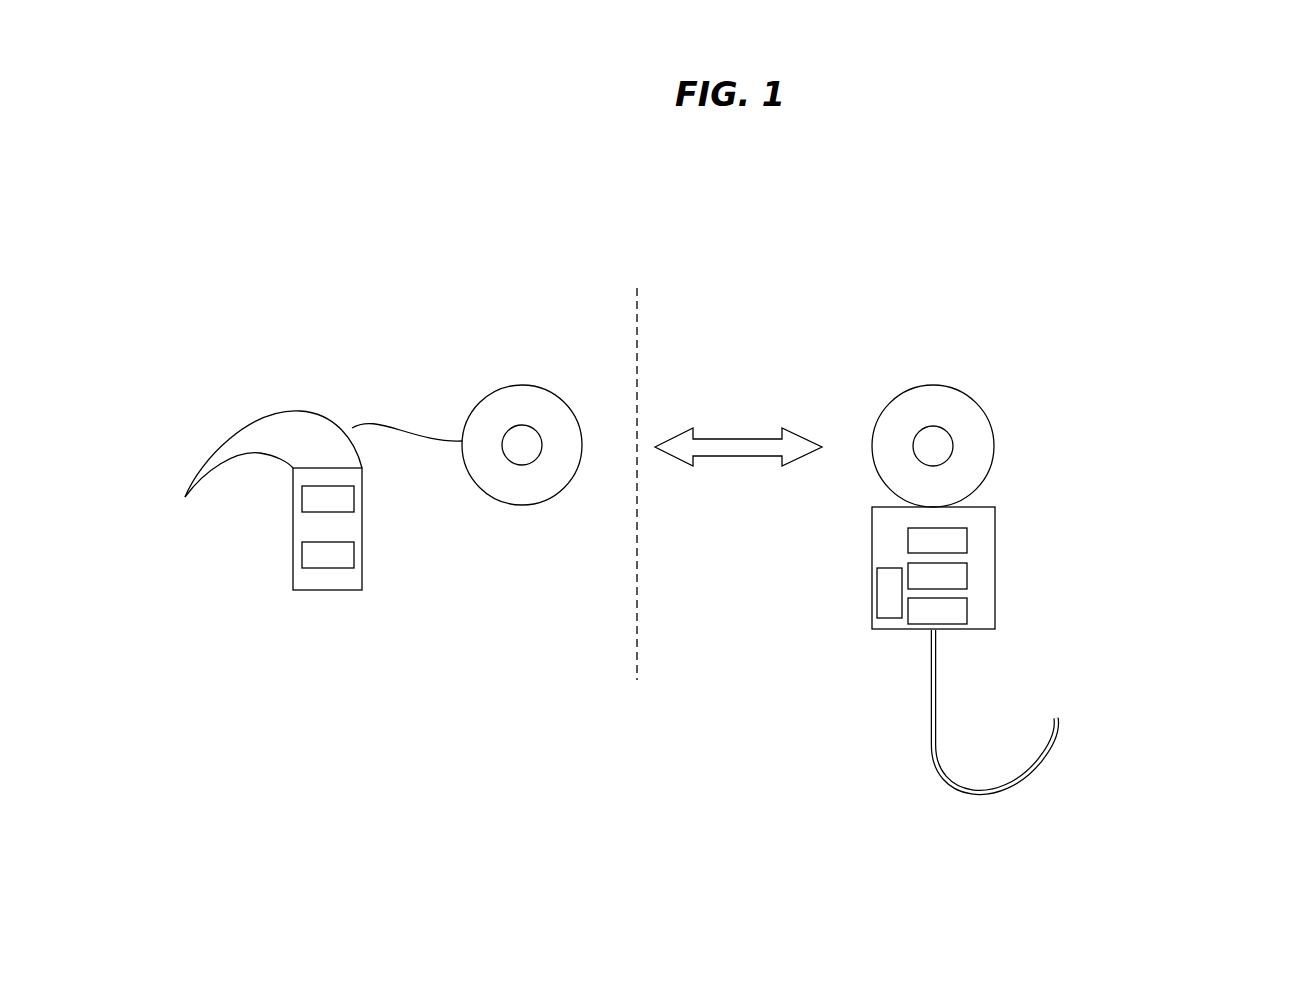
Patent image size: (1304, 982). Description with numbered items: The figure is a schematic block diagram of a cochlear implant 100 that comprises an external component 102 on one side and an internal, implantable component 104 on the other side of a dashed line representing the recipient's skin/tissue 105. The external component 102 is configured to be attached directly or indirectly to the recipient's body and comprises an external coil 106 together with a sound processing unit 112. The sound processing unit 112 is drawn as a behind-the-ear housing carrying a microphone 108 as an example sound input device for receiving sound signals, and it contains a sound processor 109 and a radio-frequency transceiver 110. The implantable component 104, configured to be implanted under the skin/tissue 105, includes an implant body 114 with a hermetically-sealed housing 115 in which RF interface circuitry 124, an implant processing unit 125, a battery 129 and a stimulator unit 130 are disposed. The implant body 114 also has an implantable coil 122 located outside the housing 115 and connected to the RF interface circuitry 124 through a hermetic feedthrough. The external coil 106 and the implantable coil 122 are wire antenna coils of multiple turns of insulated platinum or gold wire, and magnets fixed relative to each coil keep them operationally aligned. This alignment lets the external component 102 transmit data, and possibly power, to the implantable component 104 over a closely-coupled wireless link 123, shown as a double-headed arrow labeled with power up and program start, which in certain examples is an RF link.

The cochlear implant 100 is at (874, 170).
The external component 102 is at (354, 316).
The implantable component 104 is at (983, 256).
The skin/tissue 105 is at (638, 641).
The external coil 106 is at (540, 386).
The microphone 108 is at (214, 444).
The sound processor 109 is at (354, 497).
The radio-frequency (RF) transceiver 110 is at (354, 553).
The sound processing unit 112 is at (320, 590).
The implant body 114 is at (849, 637).
The housing 115 is at (995, 540).
The implantable coil 122 is at (947, 386).
The closely-coupled wireless link 123 is at (770, 437).
The RF interface circuitry 124 is at (967, 529).
The implant processing unit 125 is at (967, 569).
The battery 129 is at (877, 590).
The stimulator unit 130 is at (967, 620).